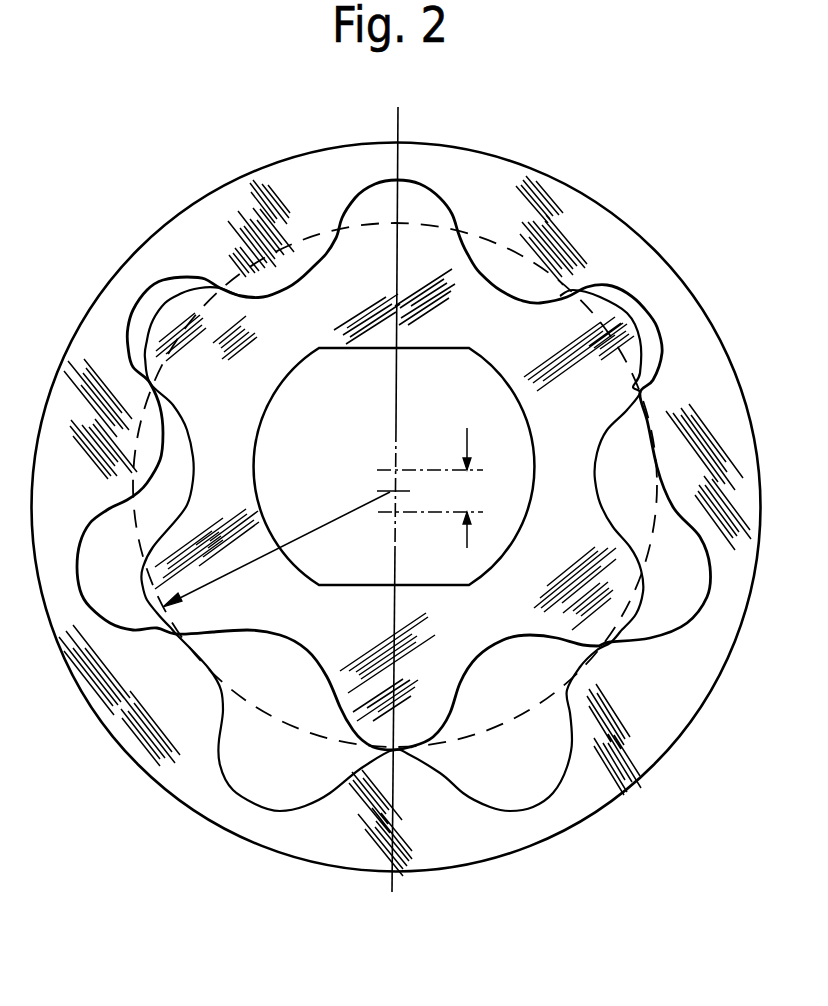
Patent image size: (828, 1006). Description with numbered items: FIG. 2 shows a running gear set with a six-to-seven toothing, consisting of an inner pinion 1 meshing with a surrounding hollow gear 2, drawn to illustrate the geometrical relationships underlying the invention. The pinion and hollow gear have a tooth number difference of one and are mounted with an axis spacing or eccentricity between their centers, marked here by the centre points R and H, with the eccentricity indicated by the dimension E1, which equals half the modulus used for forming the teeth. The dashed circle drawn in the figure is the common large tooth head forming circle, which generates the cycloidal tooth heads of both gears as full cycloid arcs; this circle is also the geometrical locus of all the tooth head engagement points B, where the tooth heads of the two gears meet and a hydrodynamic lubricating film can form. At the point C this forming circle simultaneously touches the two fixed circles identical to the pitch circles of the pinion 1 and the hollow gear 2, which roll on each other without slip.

The inner rotor 1 is at (565, 502).
The outer rotor (ring gear) 2 is at (610, 240).
The tooth head engagement points B is at (623, 684).
The contact point of forming circle with fixed circles C is at (402, 222).
The ring gear center R is at (395, 470).
The inner rotor center H is at (397, 512).
The eccentricity dimension E1=H2 E1 is at (290, 538).